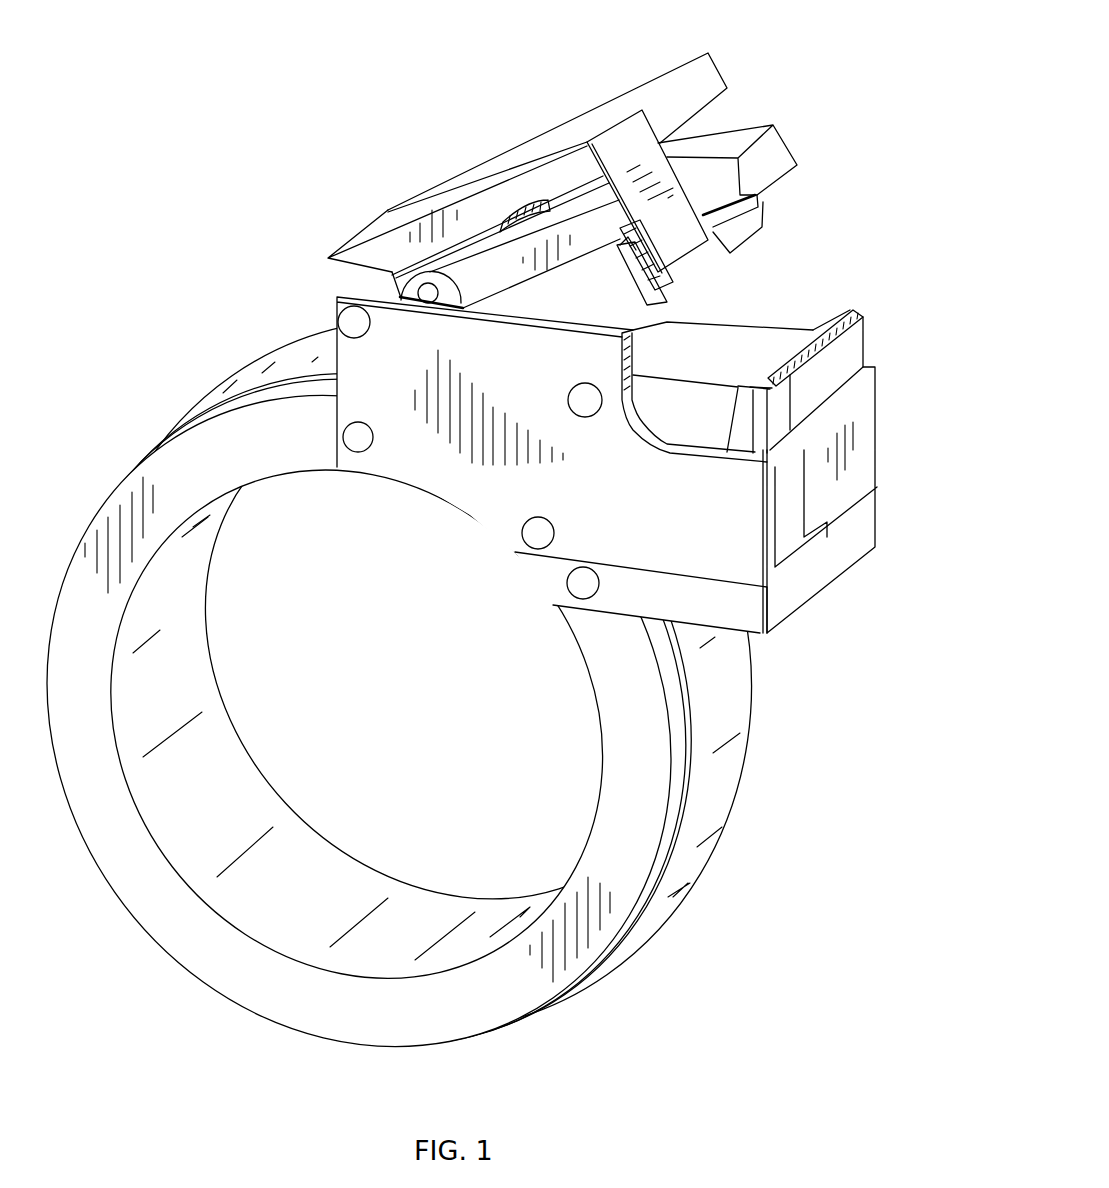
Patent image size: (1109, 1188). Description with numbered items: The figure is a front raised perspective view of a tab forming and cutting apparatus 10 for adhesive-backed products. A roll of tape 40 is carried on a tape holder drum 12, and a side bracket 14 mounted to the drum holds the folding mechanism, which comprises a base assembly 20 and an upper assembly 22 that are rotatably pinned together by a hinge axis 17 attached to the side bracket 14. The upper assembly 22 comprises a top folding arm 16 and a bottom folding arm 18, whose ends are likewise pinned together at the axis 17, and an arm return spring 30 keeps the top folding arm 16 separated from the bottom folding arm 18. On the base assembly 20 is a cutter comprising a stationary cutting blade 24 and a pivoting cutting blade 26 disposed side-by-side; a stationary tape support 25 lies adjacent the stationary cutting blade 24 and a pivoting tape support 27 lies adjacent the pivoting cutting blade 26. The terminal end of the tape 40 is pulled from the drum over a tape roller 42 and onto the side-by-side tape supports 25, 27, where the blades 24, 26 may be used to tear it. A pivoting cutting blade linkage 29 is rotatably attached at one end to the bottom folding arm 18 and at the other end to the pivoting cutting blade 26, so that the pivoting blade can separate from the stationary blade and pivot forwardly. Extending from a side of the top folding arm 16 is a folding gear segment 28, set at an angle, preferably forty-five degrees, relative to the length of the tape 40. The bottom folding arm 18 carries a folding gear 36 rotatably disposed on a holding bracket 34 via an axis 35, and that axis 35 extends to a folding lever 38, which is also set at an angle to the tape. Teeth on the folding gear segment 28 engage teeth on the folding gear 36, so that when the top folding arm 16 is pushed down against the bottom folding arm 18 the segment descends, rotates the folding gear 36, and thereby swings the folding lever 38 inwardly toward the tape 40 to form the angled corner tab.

The tab forming and cutting apparatus 10 is at (188, 153).
The tape holder drum 12 is at (186, 830).
The side bracket 14 is at (333, 362).
The top folding arm 16 is at (622, 106).
The axis 17 is at (355, 325).
The bottom folding arm 18 is at (778, 150).
The base assembly 20 is at (812, 618).
The upper assembly 22 is at (393, 186).
The stationary cutting blade 24 is at (853, 345).
The stationary tape support 25 is at (834, 312).
The pivoting cutting blade 26 is at (748, 412).
The pivoting tape support 27 is at (750, 387).
The folding gear segment 28 is at (670, 135).
The pivoting cutting blade linkage 29 is at (428, 290).
The arm return spring 30 is at (500, 217).
The holding bracket 34 is at (620, 288).
The axis 35 is at (620, 265).
The folding gear 36 is at (670, 278).
The folding lever 38 is at (750, 228).
The tape 40 is at (720, 785).
The tape roller 42 is at (663, 322).